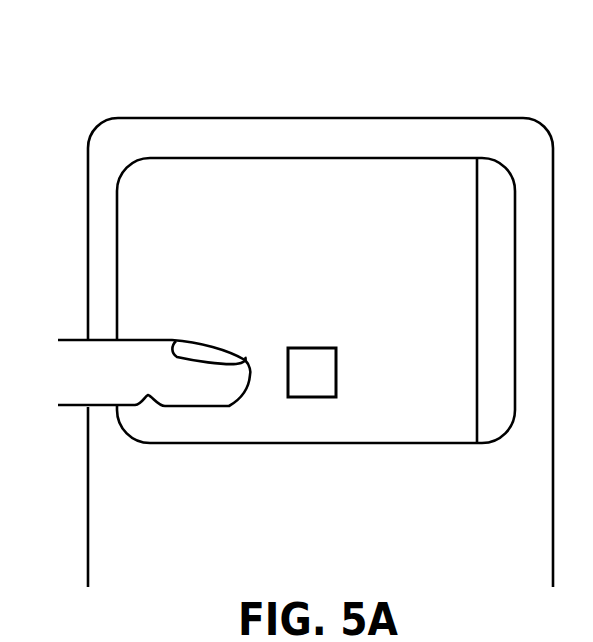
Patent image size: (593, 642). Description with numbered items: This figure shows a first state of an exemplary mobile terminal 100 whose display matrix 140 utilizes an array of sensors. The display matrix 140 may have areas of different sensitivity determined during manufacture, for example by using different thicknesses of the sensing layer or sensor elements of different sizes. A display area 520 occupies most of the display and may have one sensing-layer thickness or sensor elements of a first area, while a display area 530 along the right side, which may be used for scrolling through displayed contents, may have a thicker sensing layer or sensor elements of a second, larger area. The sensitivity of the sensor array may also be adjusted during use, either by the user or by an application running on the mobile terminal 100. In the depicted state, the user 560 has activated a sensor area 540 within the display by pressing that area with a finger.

The mobile terminal 100 is at (180, 116).
The display matrix 140 is at (114, 222).
The display area 520 is at (308, 208).
The display area 530 is at (492, 200).
The sensor area 540 is at (339, 354).
The user 560 is at (154, 373).